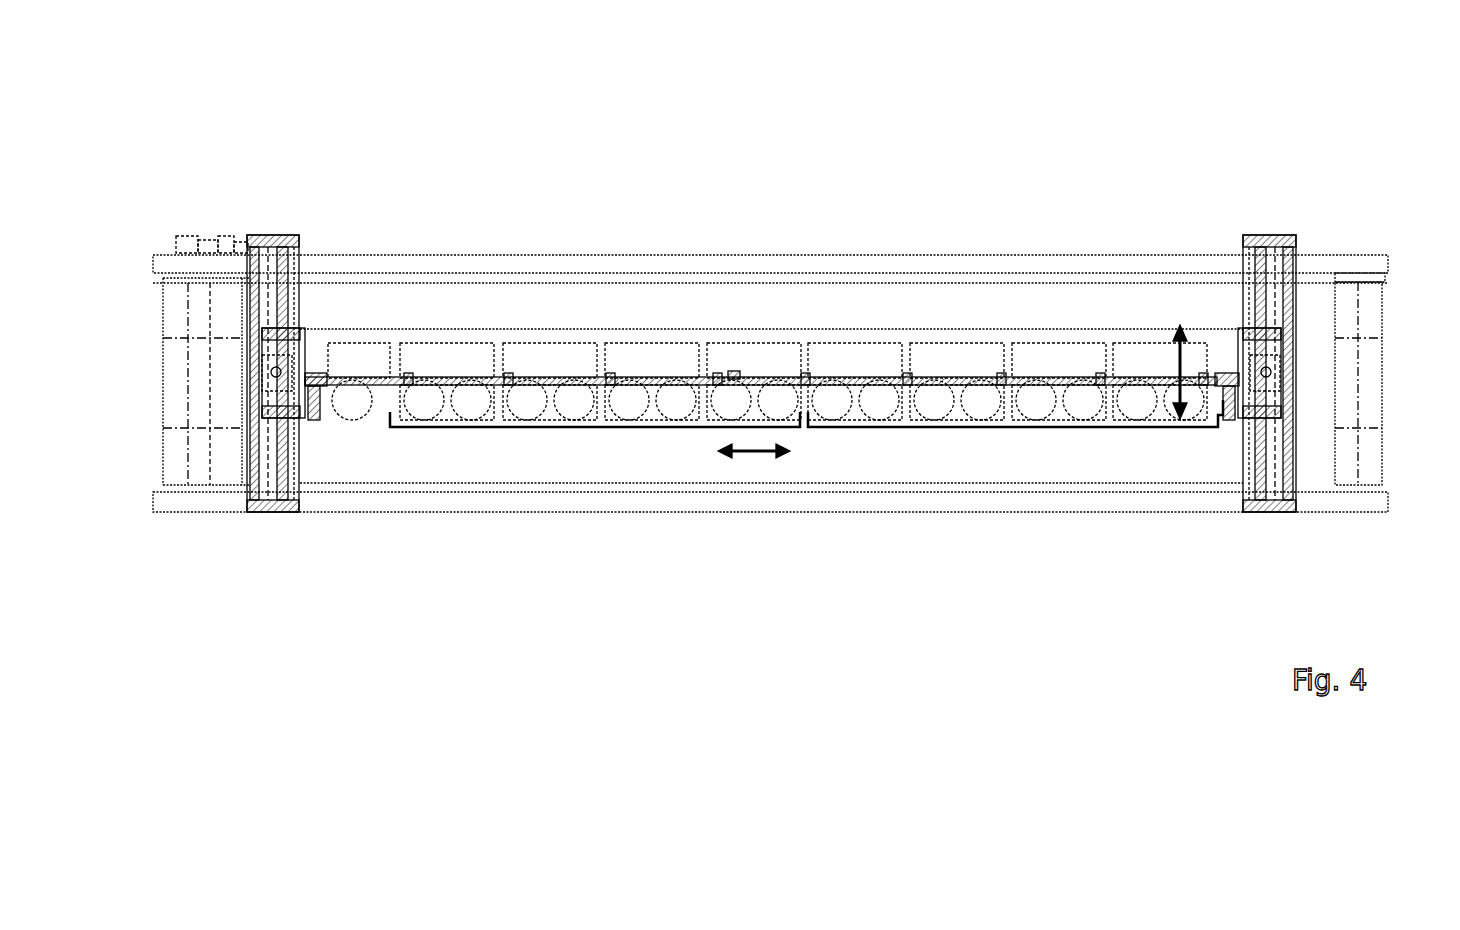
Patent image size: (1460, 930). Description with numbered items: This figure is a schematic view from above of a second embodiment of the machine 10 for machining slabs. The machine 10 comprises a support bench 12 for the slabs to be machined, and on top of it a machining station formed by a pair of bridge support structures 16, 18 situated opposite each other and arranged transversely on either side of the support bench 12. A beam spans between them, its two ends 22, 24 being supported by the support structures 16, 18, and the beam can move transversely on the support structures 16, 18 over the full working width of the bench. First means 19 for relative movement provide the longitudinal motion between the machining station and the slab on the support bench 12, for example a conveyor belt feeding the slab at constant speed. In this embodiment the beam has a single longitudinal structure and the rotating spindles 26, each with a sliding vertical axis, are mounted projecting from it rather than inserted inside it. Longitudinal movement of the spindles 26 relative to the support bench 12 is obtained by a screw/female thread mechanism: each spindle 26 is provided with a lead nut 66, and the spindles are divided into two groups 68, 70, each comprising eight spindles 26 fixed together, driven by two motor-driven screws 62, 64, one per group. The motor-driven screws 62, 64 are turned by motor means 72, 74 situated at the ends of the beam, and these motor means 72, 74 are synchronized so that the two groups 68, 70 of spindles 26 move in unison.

The machine 10 is at (1277, 201).
The support bench 12 is at (1383, 330).
The bridge support structure 16 is at (265, 237).
The bridge support structure 18 is at (1291, 237).
The first means for relative movement 19 is at (686, 460).
The end of the beam 22 is at (283, 309).
The end of the beam 24 is at (1300, 310).
The rotating spindle 26 is at (1150, 428).
The motor-driven screw 62 is at (555, 386).
The motor-driven screw 64 is at (1000, 386).
The lead nut 66 is at (408, 377).
The group of spindles 68 is at (452, 428).
The group of spindles 70 is at (863, 428).
The motor means 72 is at (317, 424).
The motor means 74 is at (1230, 424).